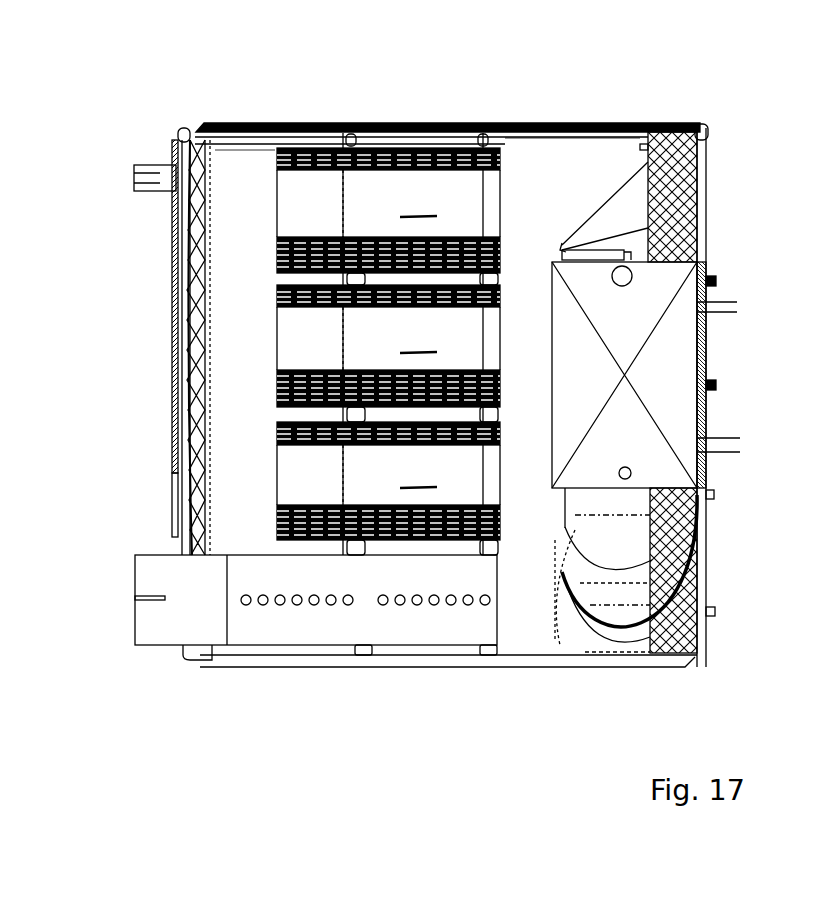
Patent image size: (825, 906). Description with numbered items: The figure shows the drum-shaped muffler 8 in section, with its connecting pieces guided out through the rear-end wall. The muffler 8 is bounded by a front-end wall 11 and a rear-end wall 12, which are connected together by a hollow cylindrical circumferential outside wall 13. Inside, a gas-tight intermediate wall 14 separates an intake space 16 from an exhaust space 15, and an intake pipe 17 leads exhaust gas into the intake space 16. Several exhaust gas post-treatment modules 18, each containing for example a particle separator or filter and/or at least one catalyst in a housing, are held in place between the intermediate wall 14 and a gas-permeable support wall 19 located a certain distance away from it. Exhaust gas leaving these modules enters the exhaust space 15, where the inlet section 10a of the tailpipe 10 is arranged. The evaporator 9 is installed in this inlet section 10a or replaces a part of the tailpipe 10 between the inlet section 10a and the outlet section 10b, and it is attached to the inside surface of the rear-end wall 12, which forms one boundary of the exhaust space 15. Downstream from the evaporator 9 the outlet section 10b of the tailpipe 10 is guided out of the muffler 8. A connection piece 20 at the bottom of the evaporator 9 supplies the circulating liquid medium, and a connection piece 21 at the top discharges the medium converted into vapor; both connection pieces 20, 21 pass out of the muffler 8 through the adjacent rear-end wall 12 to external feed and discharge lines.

The muffler 8 is at (414, 123).
The evaporator 9 is at (592, 360).
The tailpipe 10 is at (566, 512).
The inlet section of the tailpipe 10a is at (605, 218).
The outlet section of the tailpipe 10b is at (595, 572).
The front-end wall 11 is at (172, 357).
The rear-end wall 12 is at (700, 196).
The circumferential outside wall 13 is at (540, 656).
The intermediate wall 14 is at (484, 135).
The exhaust space 15 is at (560, 150).
The intake space 16 is at (235, 168).
The intake pipe 17 is at (290, 630).
The exhaust gas post-treatment module 18 is at (388, 351).
The support wall 19 is at (346, 136).
The connection piece 20 is at (730, 440).
The connection piece 21 is at (726, 300).